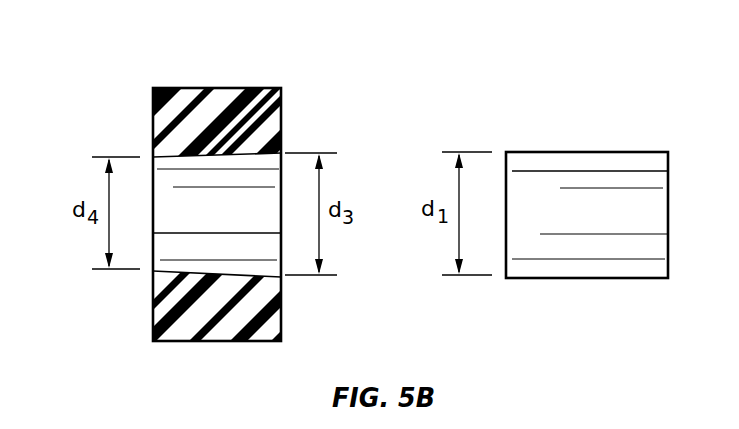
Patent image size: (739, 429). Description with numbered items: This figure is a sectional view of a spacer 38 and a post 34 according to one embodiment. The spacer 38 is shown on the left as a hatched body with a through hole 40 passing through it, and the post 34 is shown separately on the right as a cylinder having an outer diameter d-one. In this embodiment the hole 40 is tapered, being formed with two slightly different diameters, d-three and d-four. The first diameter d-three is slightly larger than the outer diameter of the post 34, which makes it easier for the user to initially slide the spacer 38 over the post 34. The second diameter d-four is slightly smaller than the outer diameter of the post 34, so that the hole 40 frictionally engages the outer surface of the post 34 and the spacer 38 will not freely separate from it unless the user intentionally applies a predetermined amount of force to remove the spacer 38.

The spacer 38 is at (190, 87).
The through hole 40 is at (175, 187).
The post 34 is at (610, 152).